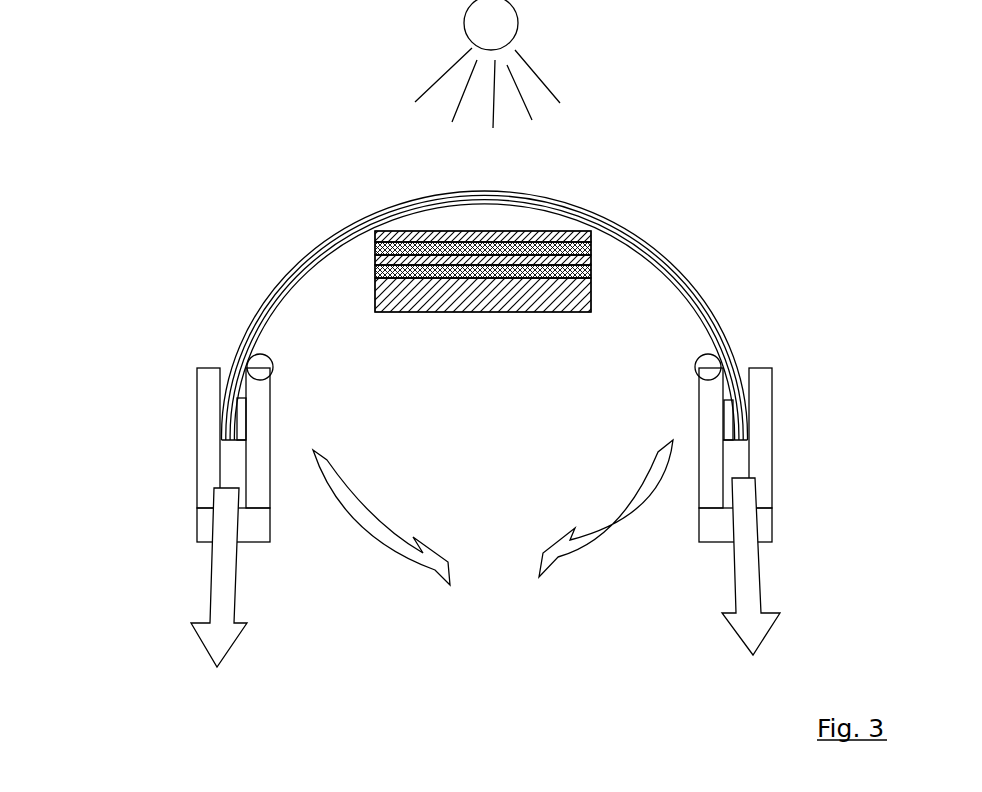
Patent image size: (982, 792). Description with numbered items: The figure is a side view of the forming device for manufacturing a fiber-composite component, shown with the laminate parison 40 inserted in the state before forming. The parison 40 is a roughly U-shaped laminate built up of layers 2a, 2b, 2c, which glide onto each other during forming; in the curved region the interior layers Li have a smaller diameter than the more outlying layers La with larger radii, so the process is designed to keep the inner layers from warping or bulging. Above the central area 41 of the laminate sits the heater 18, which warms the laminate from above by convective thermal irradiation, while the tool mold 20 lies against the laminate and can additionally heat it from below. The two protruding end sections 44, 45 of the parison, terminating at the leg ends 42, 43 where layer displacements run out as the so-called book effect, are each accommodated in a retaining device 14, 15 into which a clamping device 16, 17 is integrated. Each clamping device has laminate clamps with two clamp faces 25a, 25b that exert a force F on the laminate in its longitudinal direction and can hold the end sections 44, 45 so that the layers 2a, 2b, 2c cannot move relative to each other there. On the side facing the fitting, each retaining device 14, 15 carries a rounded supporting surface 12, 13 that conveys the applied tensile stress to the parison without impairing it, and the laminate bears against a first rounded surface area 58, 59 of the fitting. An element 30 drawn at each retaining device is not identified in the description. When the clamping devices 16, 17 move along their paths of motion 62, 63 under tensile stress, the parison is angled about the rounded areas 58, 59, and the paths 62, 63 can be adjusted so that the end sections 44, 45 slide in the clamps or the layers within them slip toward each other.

The heater 18 is at (505, 26).
The laminate parison 40 is at (451, 262).
The central area 41 is at (456, 285).
The laminate layer 2c is at (309, 250).
The laminate layer 2b is at (292, 278).
The laminate layer 2a is at (268, 296).
The outer layers La is at (249, 320).
The interior layers Li is at (262, 330).
The tool mold 20 is at (493, 312).
The first rounded surface area 58 is at (372, 236).
The first rounded surface area 59 is at (597, 234).
The pivot pin 30 is at (260, 367).
The retaining device 14 is at (157, 345).
The retaining device 15 is at (803, 343).
The supporting surface 12 is at (250, 352).
The supporting surface 13 is at (700, 352).
The clamping device 16 is at (178, 397).
The clamping device 17 is at (775, 395).
The clamp face 25a is at (204, 498).
The clamp face 25b is at (258, 484).
The leg end 42 is at (230, 440).
The leg end 43 is at (733, 451).
The end section 44 is at (238, 394).
The end section 45 is at (743, 389).
The path of motion 62 is at (366, 528).
The path of motion 63 is at (615, 527).
The force F is at (486, 572).